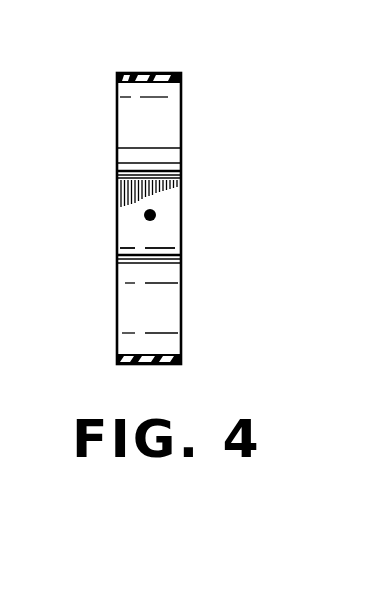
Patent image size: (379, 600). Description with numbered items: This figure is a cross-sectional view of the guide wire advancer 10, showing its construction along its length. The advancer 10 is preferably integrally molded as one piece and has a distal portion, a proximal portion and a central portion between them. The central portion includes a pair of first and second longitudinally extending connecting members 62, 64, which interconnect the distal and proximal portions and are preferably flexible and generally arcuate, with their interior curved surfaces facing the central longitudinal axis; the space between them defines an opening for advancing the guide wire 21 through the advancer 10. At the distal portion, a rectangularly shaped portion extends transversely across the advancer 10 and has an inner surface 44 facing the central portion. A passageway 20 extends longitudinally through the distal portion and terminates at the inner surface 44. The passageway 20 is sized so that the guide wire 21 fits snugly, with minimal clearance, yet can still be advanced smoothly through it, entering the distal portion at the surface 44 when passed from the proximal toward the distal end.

The guide wire advancer 10 is at (113, 96).
The second connecting member 64 is at (165, 96).
The first connecting member 62 is at (168, 325).
The inner surface 44 is at (168, 197).
The guide wire 21 is at (152, 216).
The passageway 20 is at (148, 216).